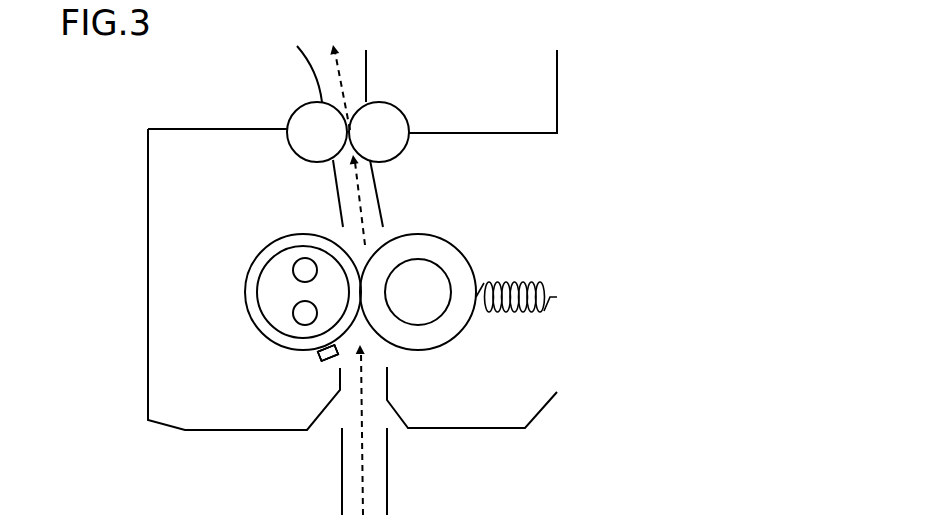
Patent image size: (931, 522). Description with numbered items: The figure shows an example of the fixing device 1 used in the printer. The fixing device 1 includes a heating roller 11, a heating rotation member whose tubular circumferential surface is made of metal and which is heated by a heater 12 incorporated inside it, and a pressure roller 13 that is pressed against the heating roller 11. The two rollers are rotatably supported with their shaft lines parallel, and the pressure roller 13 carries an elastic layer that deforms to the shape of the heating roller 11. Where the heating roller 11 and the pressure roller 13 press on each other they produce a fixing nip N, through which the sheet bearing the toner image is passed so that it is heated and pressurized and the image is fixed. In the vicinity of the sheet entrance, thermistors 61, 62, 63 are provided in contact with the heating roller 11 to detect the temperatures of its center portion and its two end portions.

The fixing device 1 is at (141, 423).
The heating roller 11 is at (247, 292).
The heater 12 is at (303, 312).
The pressure roller 13 is at (427, 245).
The thermistor 61 is at (322, 355).
The thermistor 62 is at (328, 353).
The third thermistor 63 is at (328, 353).
The fixing nip N is at (369, 303).